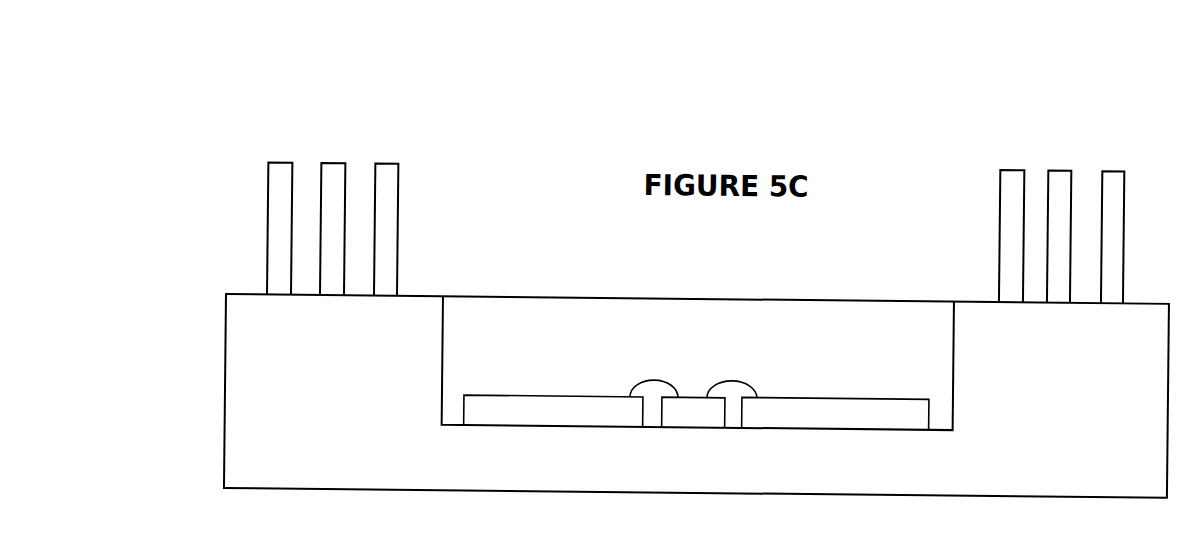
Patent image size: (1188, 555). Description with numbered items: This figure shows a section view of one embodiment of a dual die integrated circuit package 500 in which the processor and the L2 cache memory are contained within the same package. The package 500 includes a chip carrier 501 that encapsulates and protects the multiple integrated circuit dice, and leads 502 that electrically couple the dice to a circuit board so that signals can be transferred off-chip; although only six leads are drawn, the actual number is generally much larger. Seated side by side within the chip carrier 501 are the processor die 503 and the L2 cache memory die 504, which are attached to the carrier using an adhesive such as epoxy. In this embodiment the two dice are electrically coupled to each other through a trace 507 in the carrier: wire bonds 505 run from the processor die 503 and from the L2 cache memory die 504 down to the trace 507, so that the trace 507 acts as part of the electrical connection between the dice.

The package 500 is at (208, 100).
The chip carrier 501 is at (696, 396).
The leads 502 is at (408, 151).
The processor die 503 is at (565, 392).
The L2 cache memory die 504 is at (842, 391).
The wirebond 505 is at (732, 375).
The trace 507 is at (702, 414).